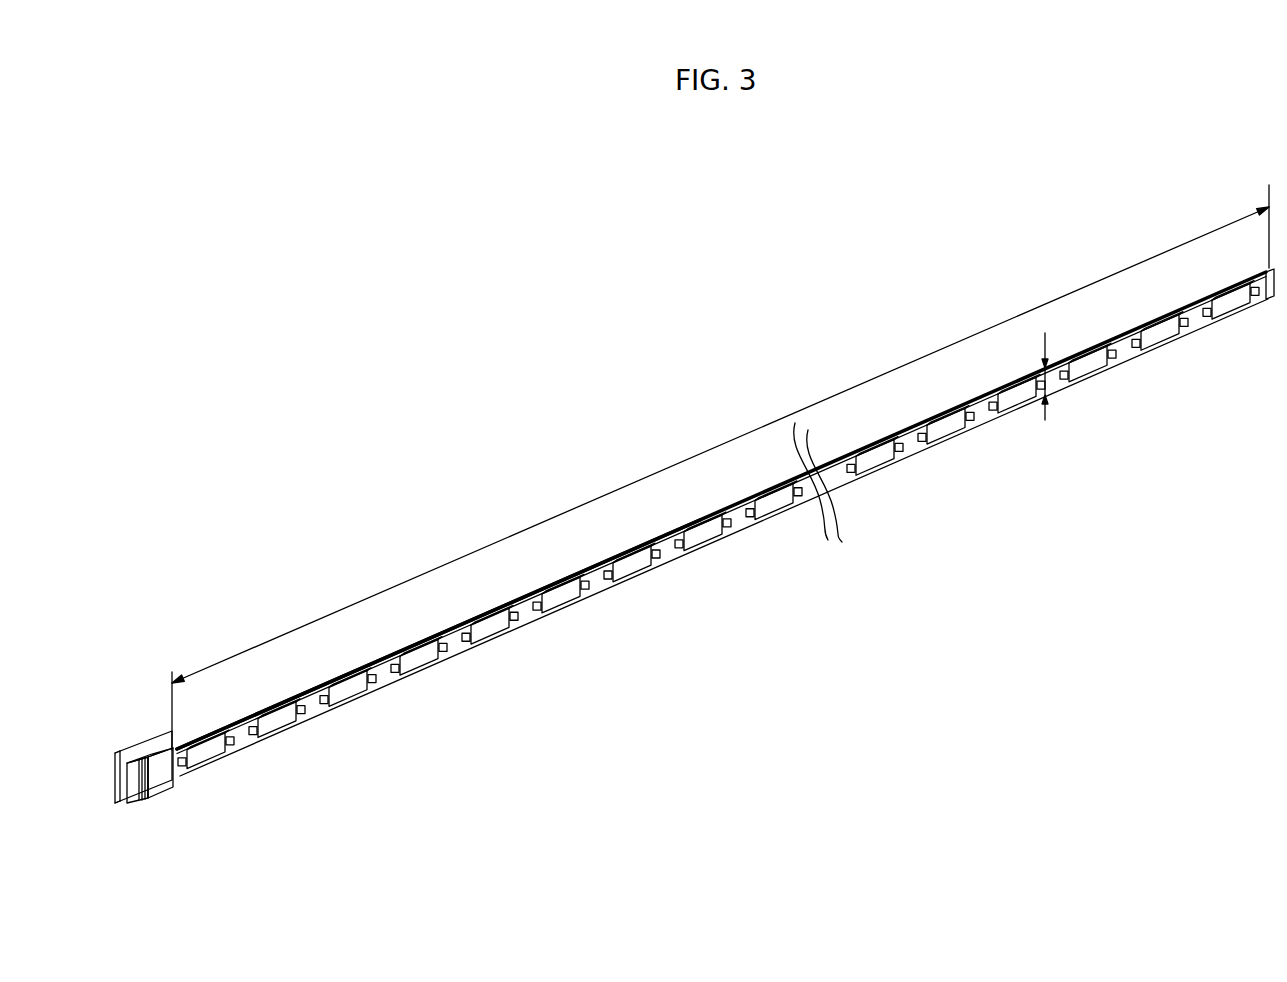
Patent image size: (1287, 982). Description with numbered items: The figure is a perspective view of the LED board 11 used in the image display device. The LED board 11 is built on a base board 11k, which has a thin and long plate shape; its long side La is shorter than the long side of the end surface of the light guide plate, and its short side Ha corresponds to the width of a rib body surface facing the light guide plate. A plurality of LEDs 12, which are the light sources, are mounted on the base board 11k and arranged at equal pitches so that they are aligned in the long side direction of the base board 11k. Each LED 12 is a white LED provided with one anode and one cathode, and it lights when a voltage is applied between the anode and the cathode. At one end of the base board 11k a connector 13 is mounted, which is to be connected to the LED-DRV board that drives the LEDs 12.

The LED board 11 is at (1132, 210).
The base board 11k is at (512, 601).
The LED 12 is at (206, 758).
The connector 13 is at (158, 798).